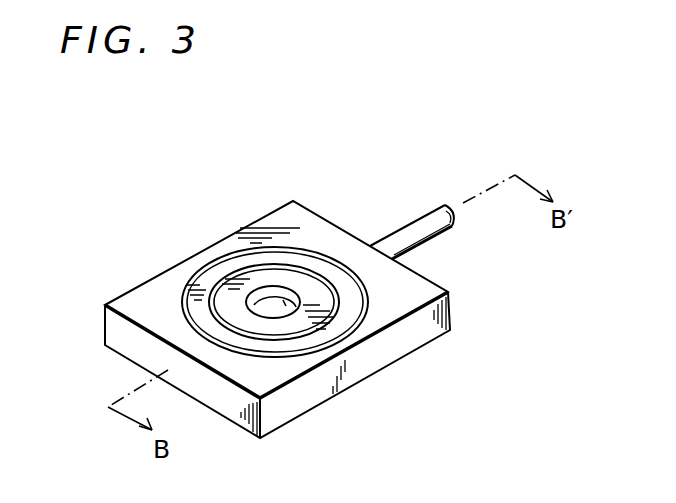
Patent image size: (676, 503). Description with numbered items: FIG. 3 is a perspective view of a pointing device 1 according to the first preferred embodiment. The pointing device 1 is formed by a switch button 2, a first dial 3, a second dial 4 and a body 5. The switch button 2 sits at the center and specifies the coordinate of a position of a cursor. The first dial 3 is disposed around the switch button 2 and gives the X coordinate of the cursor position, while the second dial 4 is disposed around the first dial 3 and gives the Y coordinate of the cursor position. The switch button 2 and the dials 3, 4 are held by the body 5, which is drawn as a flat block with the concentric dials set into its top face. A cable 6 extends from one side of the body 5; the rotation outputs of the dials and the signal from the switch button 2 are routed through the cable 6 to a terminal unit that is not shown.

The pointing device 1 is at (382, 427).
The switch button 2 is at (253, 295).
The first dial 3 is at (263, 278).
The second dial 4 is at (285, 260).
The body 5 is at (315, 218).
The cable 6 is at (438, 237).